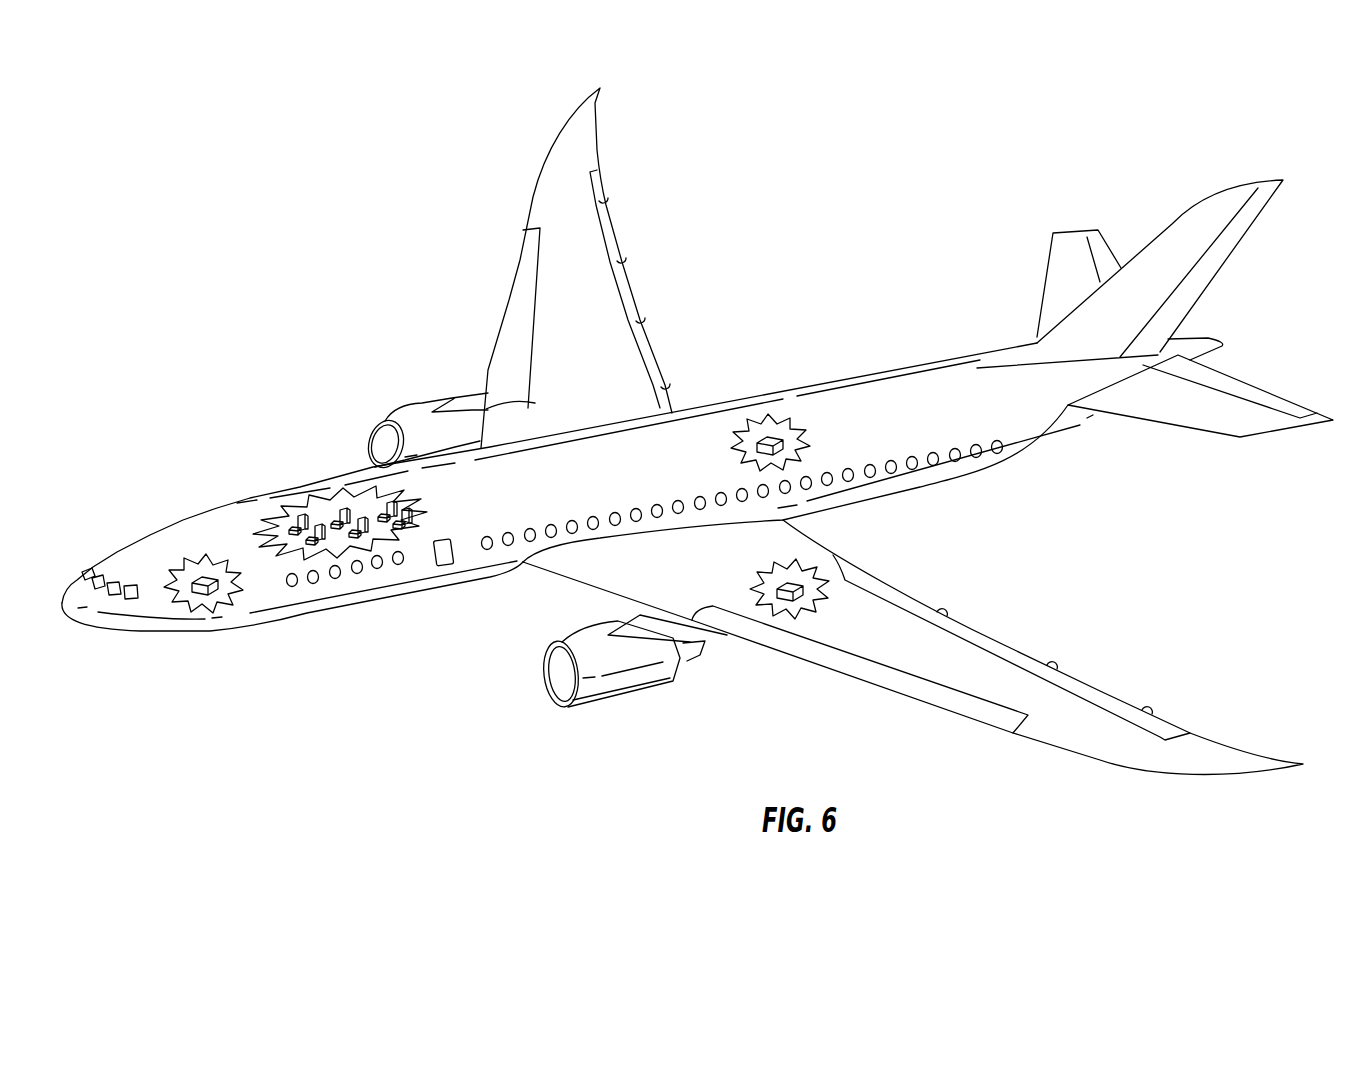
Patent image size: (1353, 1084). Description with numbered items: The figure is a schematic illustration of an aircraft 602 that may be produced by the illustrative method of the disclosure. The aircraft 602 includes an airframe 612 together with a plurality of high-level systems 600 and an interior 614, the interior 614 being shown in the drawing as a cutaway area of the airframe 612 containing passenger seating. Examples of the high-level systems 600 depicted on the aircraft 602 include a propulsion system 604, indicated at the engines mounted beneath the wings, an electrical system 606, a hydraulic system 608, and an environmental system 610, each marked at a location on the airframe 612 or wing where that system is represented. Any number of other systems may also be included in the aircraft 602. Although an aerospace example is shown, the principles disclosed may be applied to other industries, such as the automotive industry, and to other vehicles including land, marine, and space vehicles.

The high-level systems 600 is at (697, 431).
The aircraft 602 is at (322, 306).
The propulsion system 604 is at (422, 405).
The electrical system 606 is at (203, 577).
The hydraulic system 608 is at (800, 577).
The environmental system 610 is at (772, 440).
The airframe 612 is at (340, 516).
The interior 614 is at (325, 542).